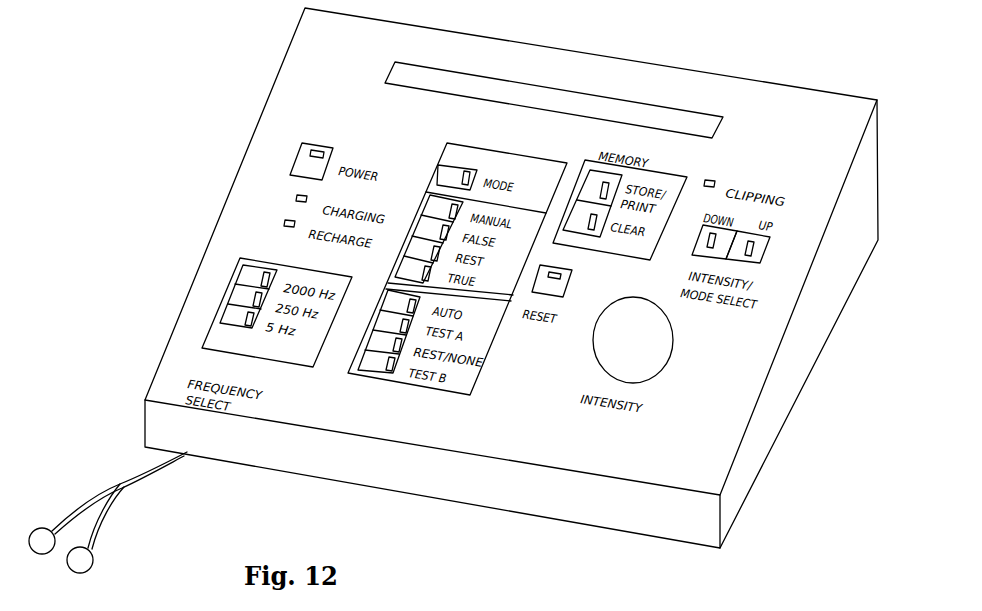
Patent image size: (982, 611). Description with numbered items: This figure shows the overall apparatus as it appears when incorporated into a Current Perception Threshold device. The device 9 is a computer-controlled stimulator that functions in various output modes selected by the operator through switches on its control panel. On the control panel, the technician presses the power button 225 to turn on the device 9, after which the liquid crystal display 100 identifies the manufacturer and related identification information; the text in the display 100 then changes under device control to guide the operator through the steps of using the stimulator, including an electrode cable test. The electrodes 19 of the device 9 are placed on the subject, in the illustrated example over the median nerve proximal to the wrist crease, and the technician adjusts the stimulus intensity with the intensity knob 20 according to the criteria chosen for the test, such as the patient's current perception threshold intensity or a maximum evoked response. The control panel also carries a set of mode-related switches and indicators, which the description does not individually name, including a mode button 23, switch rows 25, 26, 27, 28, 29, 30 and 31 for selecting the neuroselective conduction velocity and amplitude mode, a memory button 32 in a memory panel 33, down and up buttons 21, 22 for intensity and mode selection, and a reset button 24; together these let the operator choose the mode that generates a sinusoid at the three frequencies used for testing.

The device 9 is at (604, 48).
The liquid crystal display 100 is at (720, 128).
The power button 225 is at (300, 159).
The mode button 23 is at (446, 166).
The manual switch 25 is at (420, 225).
The false switch 26 is at (412, 247).
The rest switch 27 is at (405, 269).
The auto switch 28 is at (396, 299).
The test A switch 29 is at (385, 320).
The rest/none switch 30 is at (376, 343).
The test B switch 31 is at (369, 364).
The store/print button 32 is at (592, 185).
The memory panel 33 is at (625, 251).
The intensity down button 21 is at (700, 251).
The intensity up button 22 is at (767, 249).
The reset button 24 is at (562, 289).
The intensity knob 20 is at (652, 376).
The electrodes 19 is at (128, 487).